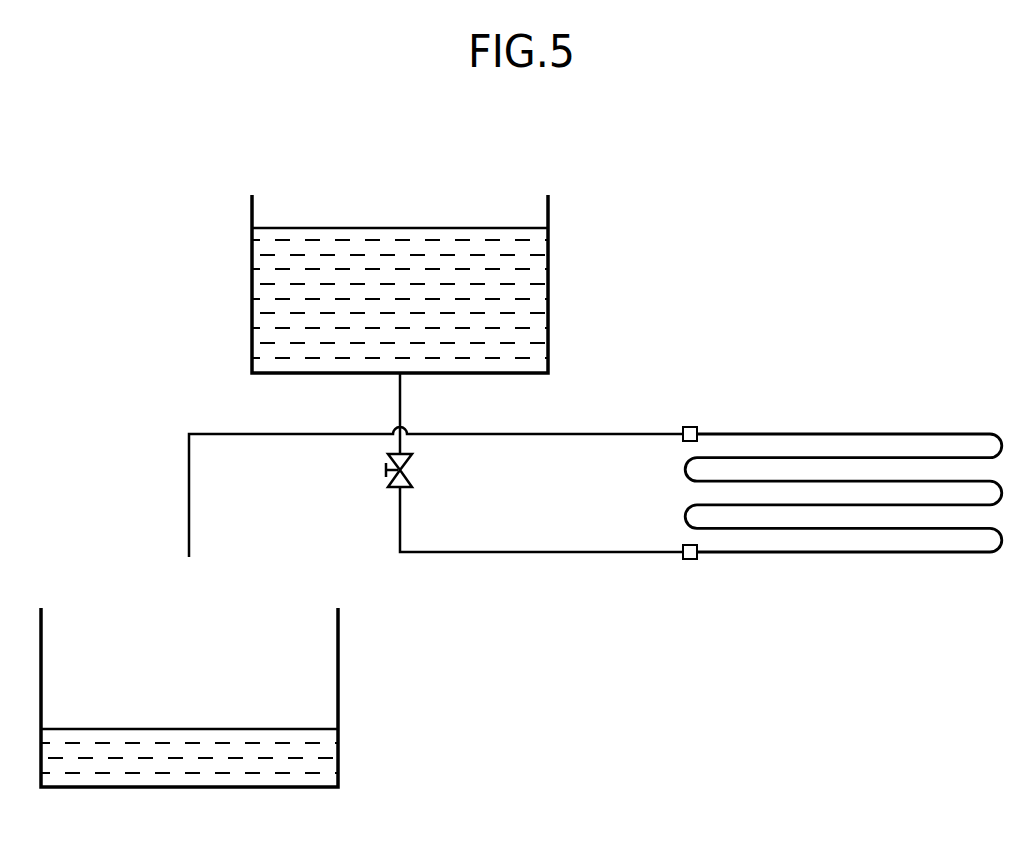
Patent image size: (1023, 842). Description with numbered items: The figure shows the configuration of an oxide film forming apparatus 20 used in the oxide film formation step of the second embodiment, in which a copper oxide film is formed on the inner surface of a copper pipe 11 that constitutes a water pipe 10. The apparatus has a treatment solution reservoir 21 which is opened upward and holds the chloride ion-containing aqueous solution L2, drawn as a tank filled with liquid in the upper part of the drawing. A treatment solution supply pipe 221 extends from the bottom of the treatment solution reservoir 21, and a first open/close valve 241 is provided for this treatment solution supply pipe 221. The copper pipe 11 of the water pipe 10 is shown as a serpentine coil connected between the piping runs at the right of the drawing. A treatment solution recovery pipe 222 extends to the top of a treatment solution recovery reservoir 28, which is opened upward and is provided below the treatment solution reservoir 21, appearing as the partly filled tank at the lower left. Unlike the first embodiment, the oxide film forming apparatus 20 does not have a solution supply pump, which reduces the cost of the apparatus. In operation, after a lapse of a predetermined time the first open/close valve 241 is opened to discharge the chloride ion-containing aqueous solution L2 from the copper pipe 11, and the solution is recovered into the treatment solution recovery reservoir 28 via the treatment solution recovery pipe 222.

The oxide film forming apparatus 20 is at (677, 284).
The treatment solution reservoir 21 is at (252, 288).
The chloride ion-containing aqueous solution L2 is at (400, 232).
The treatment solution recovery pipe 222 is at (602, 437).
The first open/close valve 241 is at (413, 470).
The treatment solution supply pipe 221 is at (560, 554).
The copper pipe 11 is at (850, 434).
The water pipe 10 is at (843, 453).
The treatment solution recovery reservoir 28 is at (338, 690).